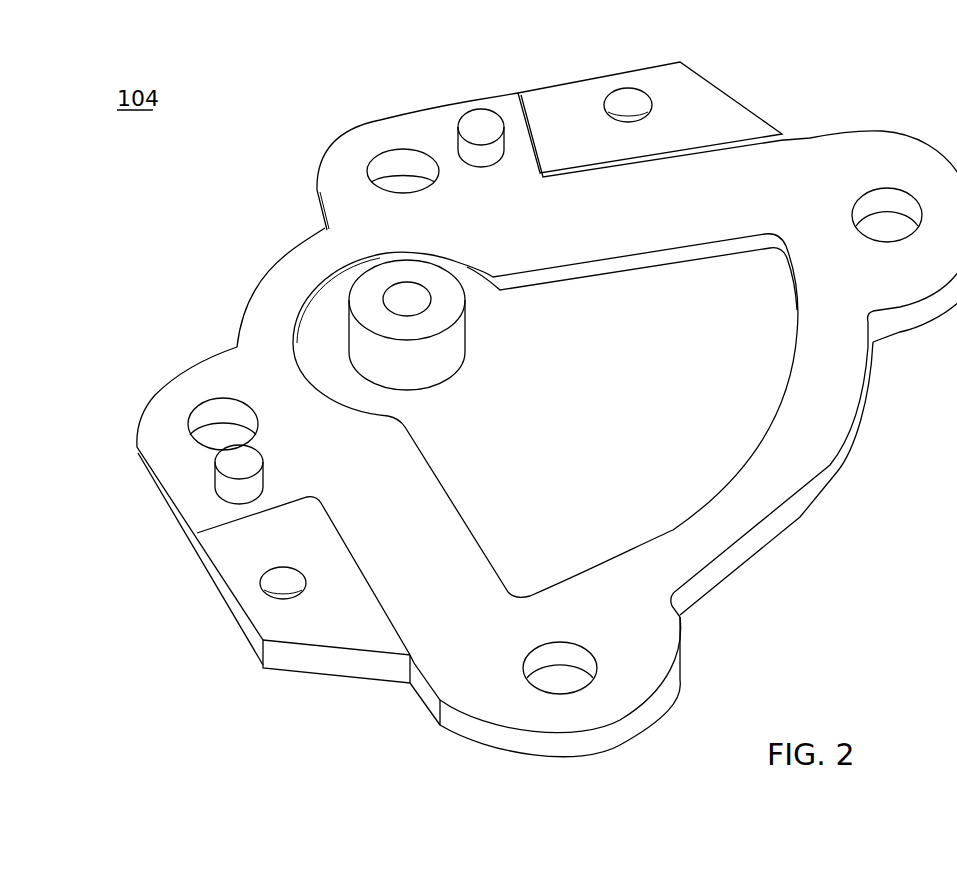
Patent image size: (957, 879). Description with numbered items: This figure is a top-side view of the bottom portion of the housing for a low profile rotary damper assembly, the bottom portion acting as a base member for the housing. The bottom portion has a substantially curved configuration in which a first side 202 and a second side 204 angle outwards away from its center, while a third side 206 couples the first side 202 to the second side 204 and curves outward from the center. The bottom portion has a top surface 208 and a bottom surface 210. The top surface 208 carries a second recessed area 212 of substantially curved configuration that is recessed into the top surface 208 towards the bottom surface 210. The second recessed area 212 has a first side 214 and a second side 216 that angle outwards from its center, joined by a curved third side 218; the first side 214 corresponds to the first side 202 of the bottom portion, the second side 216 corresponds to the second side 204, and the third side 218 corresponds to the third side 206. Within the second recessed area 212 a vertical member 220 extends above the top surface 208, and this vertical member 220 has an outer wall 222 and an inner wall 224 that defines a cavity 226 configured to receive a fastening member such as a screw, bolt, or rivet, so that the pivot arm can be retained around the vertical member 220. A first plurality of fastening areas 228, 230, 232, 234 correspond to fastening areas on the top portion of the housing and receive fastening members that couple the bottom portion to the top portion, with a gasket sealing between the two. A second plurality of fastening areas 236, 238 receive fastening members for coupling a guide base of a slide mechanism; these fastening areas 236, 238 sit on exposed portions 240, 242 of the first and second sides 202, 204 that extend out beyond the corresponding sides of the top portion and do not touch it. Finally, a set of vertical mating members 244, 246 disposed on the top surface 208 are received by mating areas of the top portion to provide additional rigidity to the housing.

The first side 202 is at (220, 603).
The second side 204 is at (497, 93).
The third side 206 is at (840, 468).
The top surface 208 is at (462, 625).
The bottom surface 210 is at (278, 673).
The second recessed area 212 is at (756, 328).
The first side 214 is at (424, 465).
The second side 216 is at (658, 249).
The third side 218 is at (748, 457).
The vertical member 220 is at (350, 315).
The outer wall 222 is at (460, 333).
The inner wall 224 is at (422, 280).
The cavity 226 is at (403, 300).
The fastening area 228 is at (213, 412).
The fastening area 230 is at (580, 653).
The fastening area 232 is at (876, 200).
The fastening area 234 is at (392, 160).
The fastening area 236 is at (283, 572).
The fastening area 238 is at (620, 98).
The exposed portion 240 is at (300, 628).
The exposed portion 242 is at (695, 88).
The vertical mating member 244 is at (255, 458).
The vertical mating member 246 is at (478, 122).